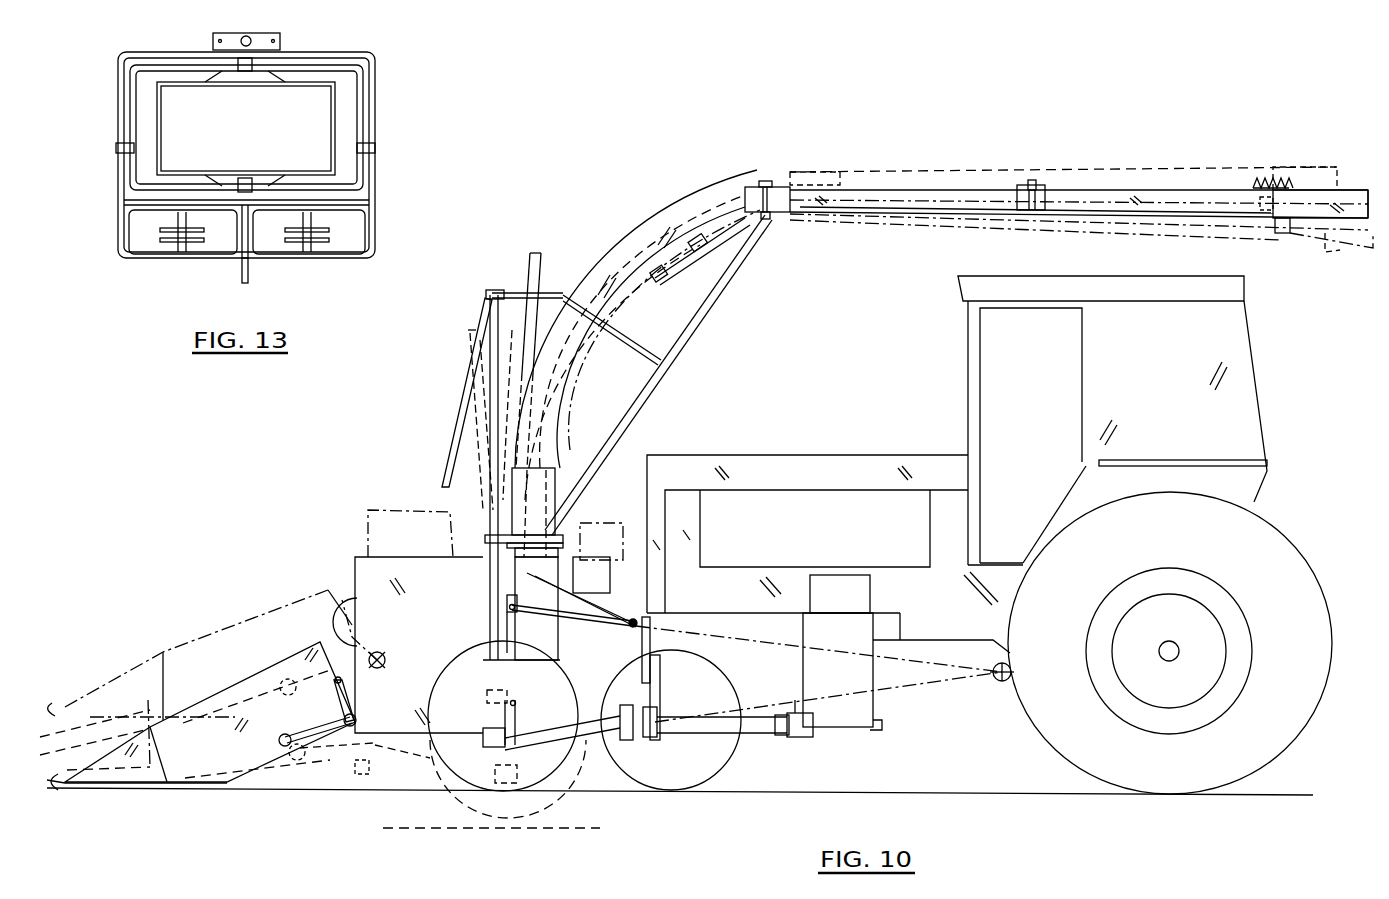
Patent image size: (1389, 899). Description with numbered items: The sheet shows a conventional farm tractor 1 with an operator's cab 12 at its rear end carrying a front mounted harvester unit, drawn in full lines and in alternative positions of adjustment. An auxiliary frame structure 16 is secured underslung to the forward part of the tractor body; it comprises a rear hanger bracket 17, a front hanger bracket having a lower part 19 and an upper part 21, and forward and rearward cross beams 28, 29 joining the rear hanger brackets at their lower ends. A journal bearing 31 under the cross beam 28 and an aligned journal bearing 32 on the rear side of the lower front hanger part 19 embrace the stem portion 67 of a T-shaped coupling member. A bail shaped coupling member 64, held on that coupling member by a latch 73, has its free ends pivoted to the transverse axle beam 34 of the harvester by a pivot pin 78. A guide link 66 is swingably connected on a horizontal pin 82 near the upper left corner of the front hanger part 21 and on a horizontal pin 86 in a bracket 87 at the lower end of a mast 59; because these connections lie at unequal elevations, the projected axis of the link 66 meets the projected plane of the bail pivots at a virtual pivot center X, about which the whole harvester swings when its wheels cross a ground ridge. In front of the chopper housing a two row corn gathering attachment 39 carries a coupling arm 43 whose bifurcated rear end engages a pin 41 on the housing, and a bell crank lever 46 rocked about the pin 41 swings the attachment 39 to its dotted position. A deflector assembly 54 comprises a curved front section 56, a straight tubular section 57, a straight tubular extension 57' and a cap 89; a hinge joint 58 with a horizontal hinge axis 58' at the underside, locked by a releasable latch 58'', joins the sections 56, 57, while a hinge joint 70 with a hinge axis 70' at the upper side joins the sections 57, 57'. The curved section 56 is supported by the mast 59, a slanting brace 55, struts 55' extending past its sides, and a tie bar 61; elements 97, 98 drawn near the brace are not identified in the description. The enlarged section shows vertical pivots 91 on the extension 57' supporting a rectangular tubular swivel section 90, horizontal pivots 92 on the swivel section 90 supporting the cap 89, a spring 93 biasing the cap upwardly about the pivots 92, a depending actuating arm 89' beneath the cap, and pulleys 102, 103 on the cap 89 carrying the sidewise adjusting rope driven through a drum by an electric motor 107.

In FIG. 10, the farm tractor 1 is at (876, 448).
In FIG. 10, the operator's cab 12 is at (1248, 414).
In FIG. 10, the auxiliary frame structure 16 is at (850, 736).
In FIG. 10, the left rear hanger bracket 17 is at (876, 728).
In FIG. 10, the lower part of front hanger bracket 19 is at (662, 684).
In FIG. 10, the upper part of front hanger bracket 21 is at (642, 650).
In FIG. 10, the forward cross beam 28 is at (796, 712).
In FIG. 10, the rearward cross beam 29 is at (880, 722).
In FIG. 10, the journal bearing 31 is at (798, 740).
In FIG. 10, the journal bearing 32 is at (656, 738).
In FIG. 10, the transverse axle beam 34 is at (483, 742).
In FIG. 10, the two row corn gathering attachment 39 is at (253, 617).
In FIG. 10, the pin 41 is at (386, 652).
In FIG. 10, the coupling arm 43 is at (352, 688).
In FIG. 10, the bell crank lever 46 is at (320, 730).
In FIG. 10, the deflector assembly 54 is at (947, 176).
In FIG. 10, the slanting brace 55 is at (658, 375).
In FIG. 10, the strut 55' is at (612, 364).
In FIG. 10, the curved front section 56 is at (645, 226).
In FIG. 10, the straight tubular section 57 is at (1079, 217).
In FIG. 13, the straight tubular extension 57' is at (246, 128).
In FIG. 10, the straight tubular extension 57' is at (1081, 200).
In FIG. 10, the hinge joint 58 is at (767, 178).
In FIG. 10, the horizontal hinge axis 58' is at (797, 232).
In FIG. 10, the releasable latch 58'' is at (803, 156).
In FIG. 10, the mast 59 is at (490, 320).
In FIG. 10, the tie bar 61 is at (541, 290).
In FIG. 10, the bail shaped coupling member 64 is at (587, 748).
In FIG. 10, the guide link 66 is at (596, 606).
In FIG. 10, the stem portion 67 is at (753, 736).
In FIG. 10, the hinge joint 70 is at (1046, 174).
In FIG. 10, the horizontal hinge axis 70' is at (1019, 174).
In FIG. 10, the latch 73 is at (630, 742).
In FIG. 10, the pivot pin 78 is at (490, 730).
In FIG. 10, the horizontal pin 82 is at (640, 621).
In FIG. 10, the horizontal pin 86 is at (510, 610).
In FIG. 10, the bracket 87 is at (505, 600).
In FIG. 13, the cap 89 is at (271, 154).
In FIG. 10, the cap 89 is at (1314, 177).
In FIG. 13, the depending actuating arm 89' is at (271, 283).
In FIG. 13, the tubular swivel section 90 is at (367, 115).
In FIG. 13, the vertical pivots 91 is at (255, 62).
In FIG. 13, the horizontal pivots 92 is at (114, 148).
In FIG. 10, the horizontal pivots 92 is at (1285, 230).
In FIG. 13, the spring 93 is at (250, 37).
In FIG. 10, the spring 93 is at (1270, 178).
In FIG. 10, the actuator cylinder 97 is at (690, 256).
In FIG. 10, the actuator mount 98 is at (706, 245).
In FIG. 13, the pulley 102 is at (175, 242).
In FIG. 13, the pulley 103 is at (318, 242).
In FIG. 10, the electric motor 107 is at (658, 283).
In FIG. 10, the virtual pivot center X is at (1000, 683).